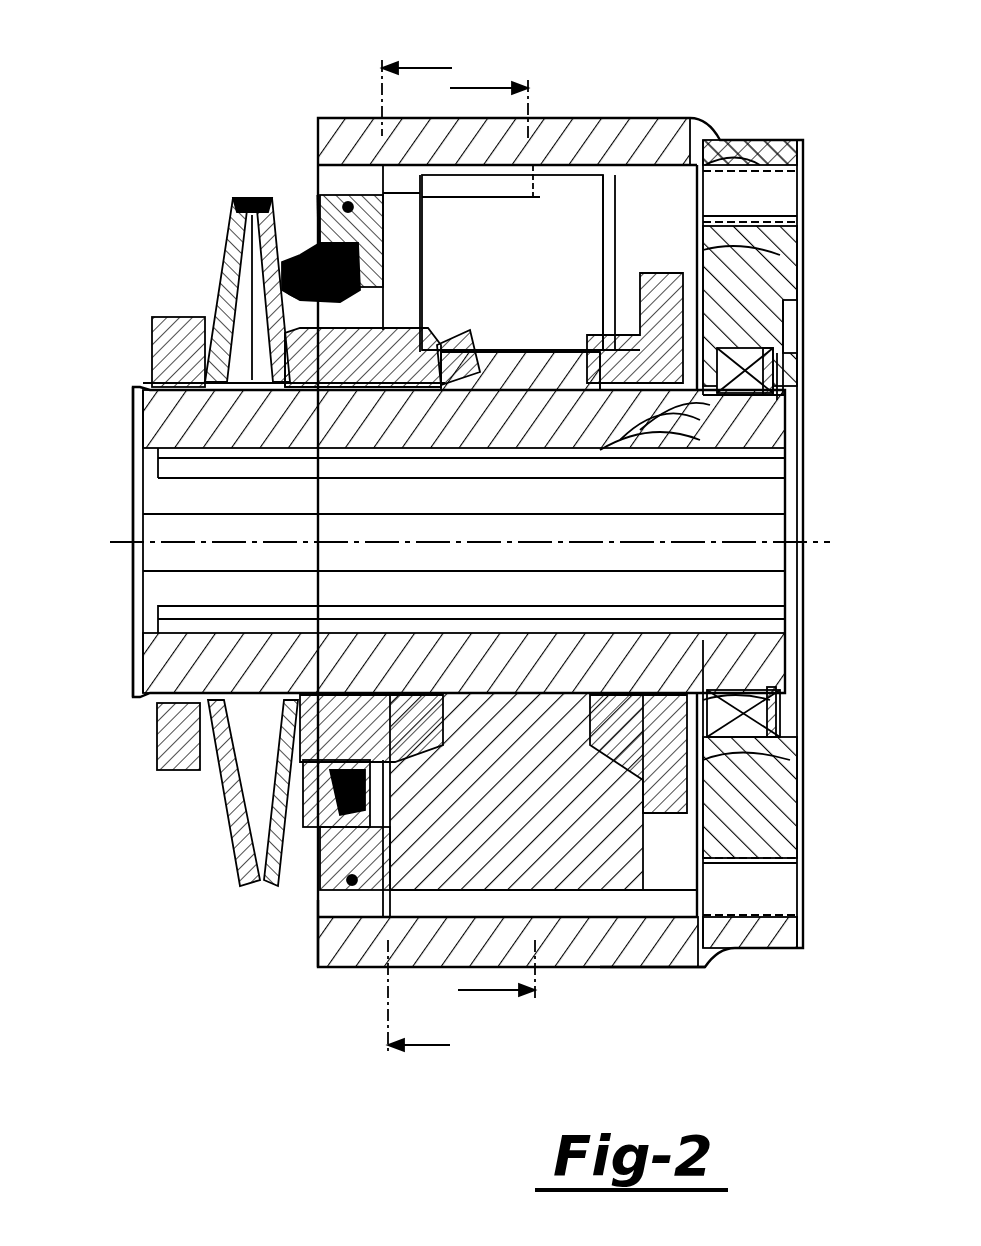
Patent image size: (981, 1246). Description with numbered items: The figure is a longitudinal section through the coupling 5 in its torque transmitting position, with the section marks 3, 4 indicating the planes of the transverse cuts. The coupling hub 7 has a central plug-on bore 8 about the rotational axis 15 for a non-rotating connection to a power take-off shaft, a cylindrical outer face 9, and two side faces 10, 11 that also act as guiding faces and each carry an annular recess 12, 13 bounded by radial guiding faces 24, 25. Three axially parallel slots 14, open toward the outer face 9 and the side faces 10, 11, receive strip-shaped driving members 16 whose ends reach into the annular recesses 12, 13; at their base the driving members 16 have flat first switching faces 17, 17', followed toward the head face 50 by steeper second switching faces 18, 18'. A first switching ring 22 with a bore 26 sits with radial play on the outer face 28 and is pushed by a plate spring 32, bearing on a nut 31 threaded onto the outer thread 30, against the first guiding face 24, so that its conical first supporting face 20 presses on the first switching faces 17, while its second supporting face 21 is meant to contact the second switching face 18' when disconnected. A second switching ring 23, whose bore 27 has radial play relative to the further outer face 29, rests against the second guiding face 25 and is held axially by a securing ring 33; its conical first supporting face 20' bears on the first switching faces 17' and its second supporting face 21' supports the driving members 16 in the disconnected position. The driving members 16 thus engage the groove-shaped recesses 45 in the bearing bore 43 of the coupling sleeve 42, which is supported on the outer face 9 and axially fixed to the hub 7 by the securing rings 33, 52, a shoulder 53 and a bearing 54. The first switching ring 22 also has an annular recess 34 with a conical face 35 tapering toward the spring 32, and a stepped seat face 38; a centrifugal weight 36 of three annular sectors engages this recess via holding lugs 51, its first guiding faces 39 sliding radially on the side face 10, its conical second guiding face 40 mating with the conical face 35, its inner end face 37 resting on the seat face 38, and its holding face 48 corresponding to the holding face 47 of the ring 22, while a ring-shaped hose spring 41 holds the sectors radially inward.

The section line 3- 3 is at (497, 543).
The section line 4- 4 is at (411, 555).
The coupling 5 is at (582, 977).
The coupling hub 7 is at (143, 447).
The plug-on bore 8 is at (170, 495).
The outer face 9 is at (643, 935).
The side face 10 is at (318, 136).
The side face 11 is at (745, 210).
The annular recess 12 is at (352, 932).
The annular recess 13 is at (643, 762).
The slots 14 is at (746, 215).
The rotational axis 15 is at (122, 544).
The driving members 16 is at (549, 215).
The first switching face 17 is at (486, 343).
The first switching face 17' is at (614, 328).
The second switching face 18 is at (512, 257).
The second switching face 18' is at (788, 347).
The first supporting face 20 is at (520, 283).
The first supporting face 20' is at (789, 241).
The second supporting face 21 is at (520, 320).
The second supporting face 21' is at (557, 432).
The first switching ring 22 is at (412, 388).
The second switching ring 23 is at (742, 300).
The guiding face 24 is at (462, 400).
The guiding face 25 is at (700, 463).
The bore 26 is at (357, 388).
The bore 27 is at (700, 443).
The outer face 28 is at (302, 390).
The further outer face 29 is at (700, 408).
The outer thread 30 is at (137, 400).
The nut 31 is at (158, 370).
The spring 32 is at (166, 340).
The securing ring 33 is at (765, 362).
The annular recess 34 is at (240, 330).
The conical face 35 is at (300, 280).
The centrifugal weight 36 is at (343, 205).
The inner end face 37 is at (330, 742).
The stepped seat face 38 is at (332, 214).
The first guiding faces 39 is at (370, 195).
The second guiding face 40 is at (286, 262).
The hose spring 41 is at (320, 932).
The coupling sleeve 42 is at (642, 162).
The bearing bore 43 is at (725, 185).
The recesses 45 is at (658, 178).
The holding face 47 is at (326, 842).
The holding face 48 is at (238, 830).
The head face 50 is at (584, 200).
The holding lug 51 is at (238, 240).
The securing ring 52 is at (800, 690).
The shoulder 53 is at (750, 790).
The bearing 54 is at (778, 735).